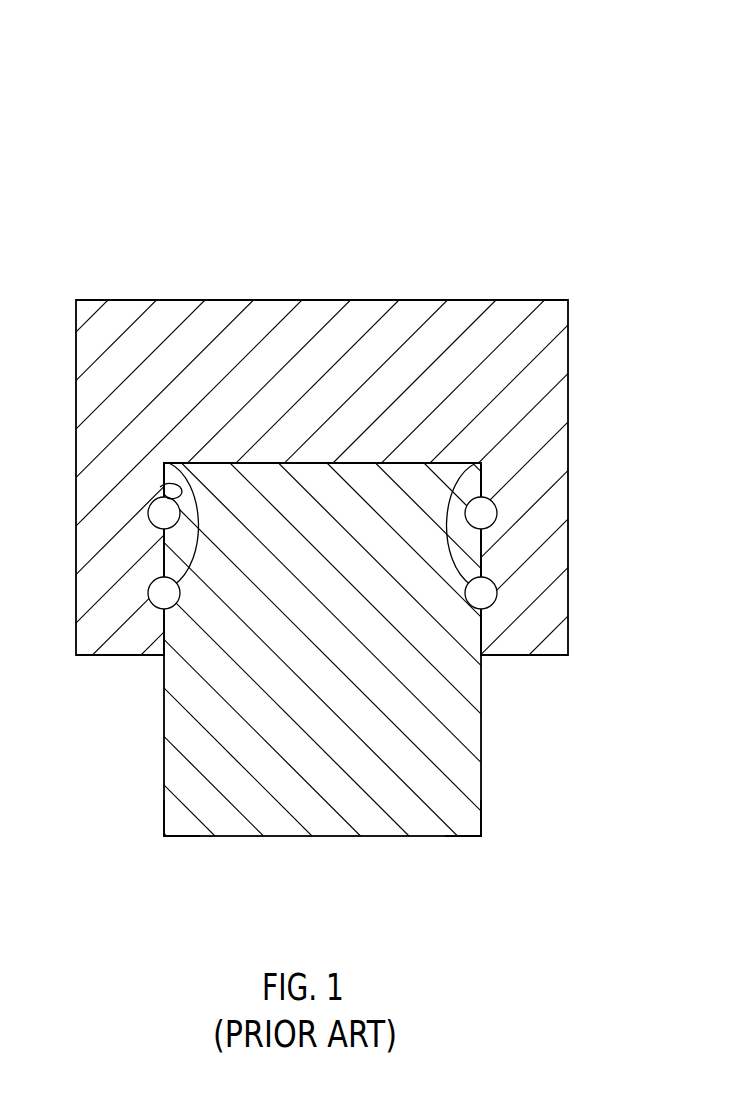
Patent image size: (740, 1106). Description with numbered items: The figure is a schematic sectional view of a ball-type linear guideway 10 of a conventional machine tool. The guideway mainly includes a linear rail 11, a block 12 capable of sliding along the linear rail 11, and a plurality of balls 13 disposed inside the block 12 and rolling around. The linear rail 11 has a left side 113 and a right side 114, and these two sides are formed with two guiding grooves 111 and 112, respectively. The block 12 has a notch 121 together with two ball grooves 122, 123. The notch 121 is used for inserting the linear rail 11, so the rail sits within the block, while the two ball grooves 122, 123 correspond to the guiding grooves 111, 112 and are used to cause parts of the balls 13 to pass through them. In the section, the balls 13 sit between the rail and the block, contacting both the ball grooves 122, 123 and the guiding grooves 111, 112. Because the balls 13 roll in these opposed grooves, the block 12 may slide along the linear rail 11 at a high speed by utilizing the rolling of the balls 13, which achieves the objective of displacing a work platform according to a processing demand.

The ball-type linear guideway 10 is at (106, 113).
The linear rail 11 is at (443, 750).
The block 12 is at (272, 352).
The balls 13 is at (488, 512).
The guiding groove 111 is at (160, 487).
The guiding groove 112 is at (468, 503).
The left side 113 is at (181, 775).
The right side 114 is at (480, 798).
The notch 121 is at (362, 463).
The ball groove 122 is at (150, 582).
The ball groove 123 is at (488, 512).